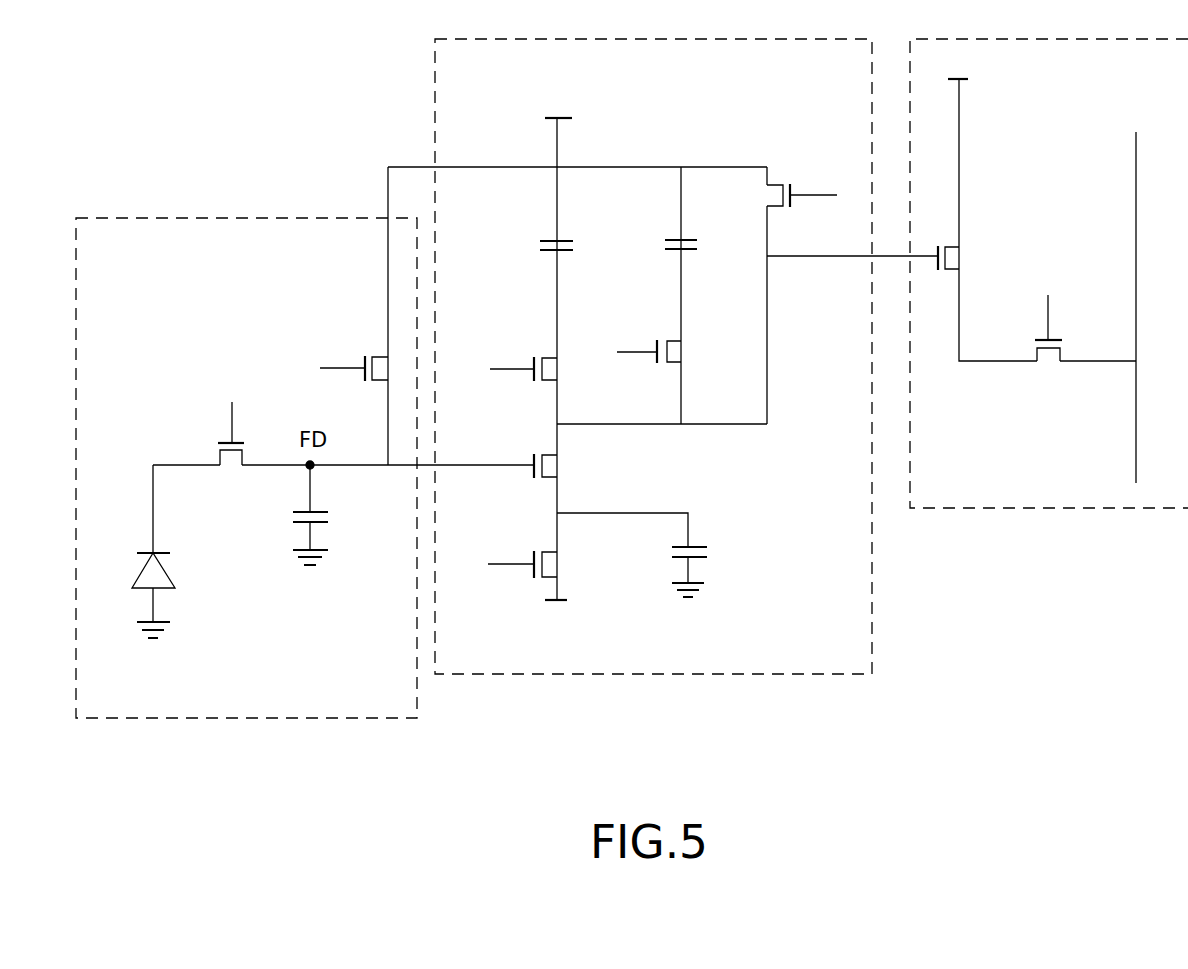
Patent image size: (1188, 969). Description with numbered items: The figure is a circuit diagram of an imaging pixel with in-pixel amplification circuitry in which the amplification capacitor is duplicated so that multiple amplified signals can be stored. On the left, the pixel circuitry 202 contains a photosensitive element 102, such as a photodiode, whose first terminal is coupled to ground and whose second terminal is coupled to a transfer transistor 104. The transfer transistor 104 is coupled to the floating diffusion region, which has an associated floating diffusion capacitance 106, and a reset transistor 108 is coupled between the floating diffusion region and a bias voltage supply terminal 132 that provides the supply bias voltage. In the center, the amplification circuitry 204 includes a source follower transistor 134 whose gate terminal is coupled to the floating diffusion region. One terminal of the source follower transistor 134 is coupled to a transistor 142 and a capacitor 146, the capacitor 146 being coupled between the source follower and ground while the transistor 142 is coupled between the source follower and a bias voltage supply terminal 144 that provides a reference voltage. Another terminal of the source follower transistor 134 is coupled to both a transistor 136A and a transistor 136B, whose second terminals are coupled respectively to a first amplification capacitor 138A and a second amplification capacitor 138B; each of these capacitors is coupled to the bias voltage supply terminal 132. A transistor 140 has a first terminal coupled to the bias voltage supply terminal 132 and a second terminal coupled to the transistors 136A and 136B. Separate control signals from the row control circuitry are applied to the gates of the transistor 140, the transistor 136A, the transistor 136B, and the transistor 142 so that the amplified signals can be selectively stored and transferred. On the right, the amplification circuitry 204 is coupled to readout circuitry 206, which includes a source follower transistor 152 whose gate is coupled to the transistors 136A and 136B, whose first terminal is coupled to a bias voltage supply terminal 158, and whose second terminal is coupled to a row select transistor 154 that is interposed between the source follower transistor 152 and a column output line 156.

The photosensitive element 102 is at (206, 595).
The transfer transistor 104 is at (232, 474).
The floating diffusion capacitance 106 is at (336, 524).
The reset transistor 108 is at (368, 352).
The bias voltage supply terminal 132 is at (575, 122).
The source follower transistor 134 is at (562, 464).
The transistor 136A is at (530, 350).
The transistor 136B is at (684, 348).
The capacitor 138A is at (568, 222).
The capacitor 138B is at (668, 262).
The transistor 140 is at (787, 168).
The transistor 142 is at (562, 563).
The bias voltage supply terminal 144 is at (566, 603).
The capacitor 146 is at (702, 530).
The source follower transistor 152 is at (976, 236).
The row select transistor 154 is at (1047, 364).
The column output line 156 is at (1135, 270).
The bias voltage supply terminal 158 is at (965, 82).
The pixel circuitry 202 is at (252, 218).
The amplification circuitry 204 is at (435, 103).
The readout circuitry 206 is at (1040, 510).